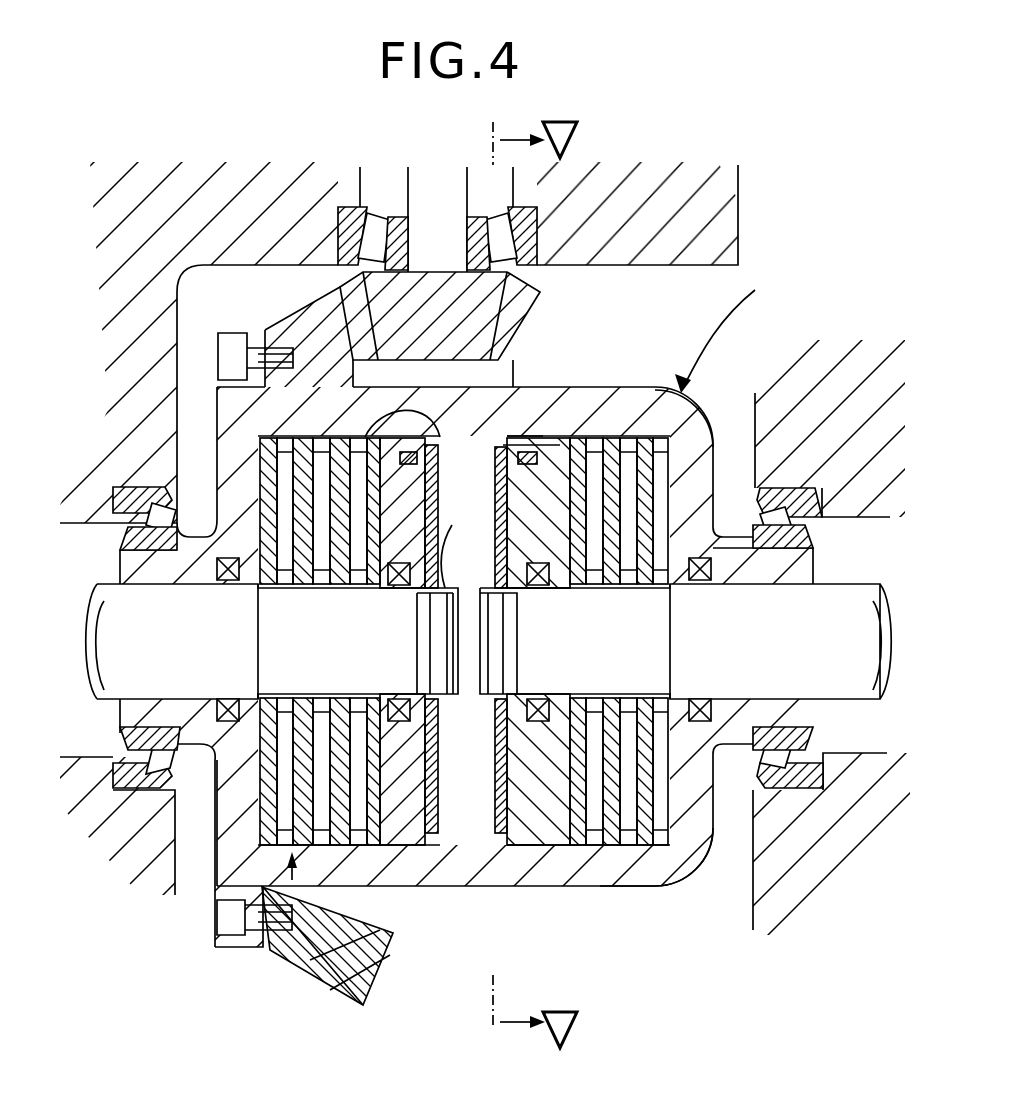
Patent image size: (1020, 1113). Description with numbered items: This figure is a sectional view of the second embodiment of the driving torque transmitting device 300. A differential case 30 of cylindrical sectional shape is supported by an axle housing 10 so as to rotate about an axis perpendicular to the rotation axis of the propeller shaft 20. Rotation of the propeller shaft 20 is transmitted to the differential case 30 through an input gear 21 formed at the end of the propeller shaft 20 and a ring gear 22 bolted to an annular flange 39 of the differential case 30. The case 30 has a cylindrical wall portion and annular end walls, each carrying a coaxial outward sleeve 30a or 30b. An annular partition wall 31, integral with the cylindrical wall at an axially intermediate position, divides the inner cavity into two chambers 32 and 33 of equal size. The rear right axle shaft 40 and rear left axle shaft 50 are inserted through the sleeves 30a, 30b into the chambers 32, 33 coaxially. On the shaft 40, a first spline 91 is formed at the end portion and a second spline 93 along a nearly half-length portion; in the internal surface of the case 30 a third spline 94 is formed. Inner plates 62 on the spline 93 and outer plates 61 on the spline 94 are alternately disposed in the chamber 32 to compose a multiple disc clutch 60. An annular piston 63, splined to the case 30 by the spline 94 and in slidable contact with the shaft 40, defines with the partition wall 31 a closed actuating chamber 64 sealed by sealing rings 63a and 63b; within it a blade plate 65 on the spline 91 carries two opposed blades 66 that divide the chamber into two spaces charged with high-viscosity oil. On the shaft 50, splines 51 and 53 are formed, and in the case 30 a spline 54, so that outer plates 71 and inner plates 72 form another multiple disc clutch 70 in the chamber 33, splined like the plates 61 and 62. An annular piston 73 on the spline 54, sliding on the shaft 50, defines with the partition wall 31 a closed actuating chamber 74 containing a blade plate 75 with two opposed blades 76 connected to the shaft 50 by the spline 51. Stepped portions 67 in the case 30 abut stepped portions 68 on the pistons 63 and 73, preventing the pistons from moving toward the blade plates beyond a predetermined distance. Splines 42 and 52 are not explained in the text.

The axle housing 10 is at (828, 407).
The propeller shaft 20 is at (412, 200).
The input gear 21 is at (508, 323).
The ring gear 22 is at (302, 331).
The differential case 30 is at (645, 388).
The differential unit 300 is at (736, 321).
The sleeve 30a is at (795, 568).
The sleeve 30b is at (136, 566).
The annular partition wall 31 is at (458, 787).
The chamber 32 is at (553, 833).
The chamber 33 is at (370, 845).
The annular flange 39 is at (233, 386).
The rear right axle shaft 40 is at (840, 672).
The right clutch hub 42 is at (540, 643).
The rear left axle shaft 50 is at (113, 682).
The spline 51 is at (440, 560).
The spline 52 is at (400, 630).
The spline 53 is at (260, 590).
The spline 54 is at (403, 457).
The multiple disc clutch 60 is at (609, 852).
The outer plates 61 is at (657, 848).
The inner plates 62 is at (642, 880).
The annular piston 63 is at (503, 830).
The sealing ring 63a is at (570, 705).
The sealing ring 63b is at (528, 880).
The closed actuating chamber 64 is at (488, 870).
The blade plate 65 is at (505, 645).
The blades 66 is at (510, 740).
The stepped portions 67 is at (437, 462).
The stepped portions 68 is at (503, 445).
The multiple disc clutch 70 is at (262, 940).
The outer plates 71 is at (262, 830).
The inner plates 72 is at (285, 858).
The annular piston 73 is at (330, 948).
The closed actuating chamber 74 is at (433, 865).
The blade plate 75 is at (428, 745).
The blades 76 is at (378, 740).
The first spline 91 is at (465, 552).
The second spline 93 is at (672, 592).
The third spline 94 is at (692, 430).